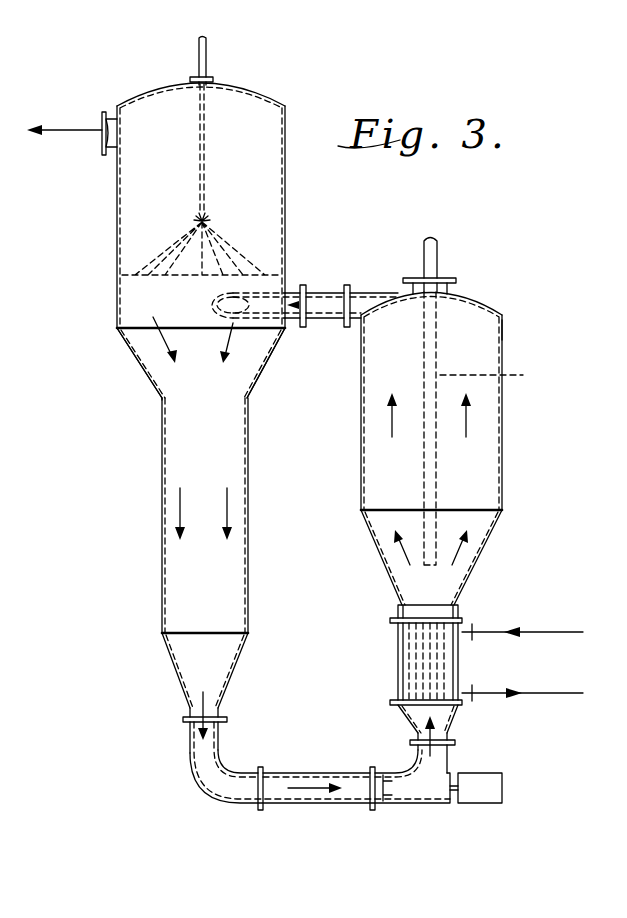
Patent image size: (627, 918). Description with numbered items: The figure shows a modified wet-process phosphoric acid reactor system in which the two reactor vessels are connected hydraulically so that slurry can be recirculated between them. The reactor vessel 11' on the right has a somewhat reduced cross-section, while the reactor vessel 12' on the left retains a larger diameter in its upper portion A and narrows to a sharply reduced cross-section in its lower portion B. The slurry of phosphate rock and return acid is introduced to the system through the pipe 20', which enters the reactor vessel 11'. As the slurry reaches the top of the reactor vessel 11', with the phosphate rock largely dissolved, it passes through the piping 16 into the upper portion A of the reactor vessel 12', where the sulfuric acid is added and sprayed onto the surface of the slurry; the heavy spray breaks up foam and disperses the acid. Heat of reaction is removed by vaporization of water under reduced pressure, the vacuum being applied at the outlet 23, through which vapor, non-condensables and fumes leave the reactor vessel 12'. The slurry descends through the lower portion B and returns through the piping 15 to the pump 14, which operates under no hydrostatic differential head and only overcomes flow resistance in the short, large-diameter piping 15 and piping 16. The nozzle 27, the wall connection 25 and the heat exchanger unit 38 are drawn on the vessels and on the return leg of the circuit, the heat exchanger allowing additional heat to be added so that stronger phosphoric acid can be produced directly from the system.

The upper portion A is at (117, 245).
The lower portion B is at (162, 500).
The feed inlet nozzle 27 is at (207, 58).
The outlet 23 is at (103, 128).
The reactor vessel 12' is at (172, 372).
The piping 15 is at (337, 759).
The pump 14 is at (455, 771).
The piping 16 is at (332, 292).
The reactor vessel 11' is at (460, 428).
The vessel wall 25 is at (502, 329).
The pipe 20' is at (496, 379).
The heat exchanger 38 is at (458, 665).